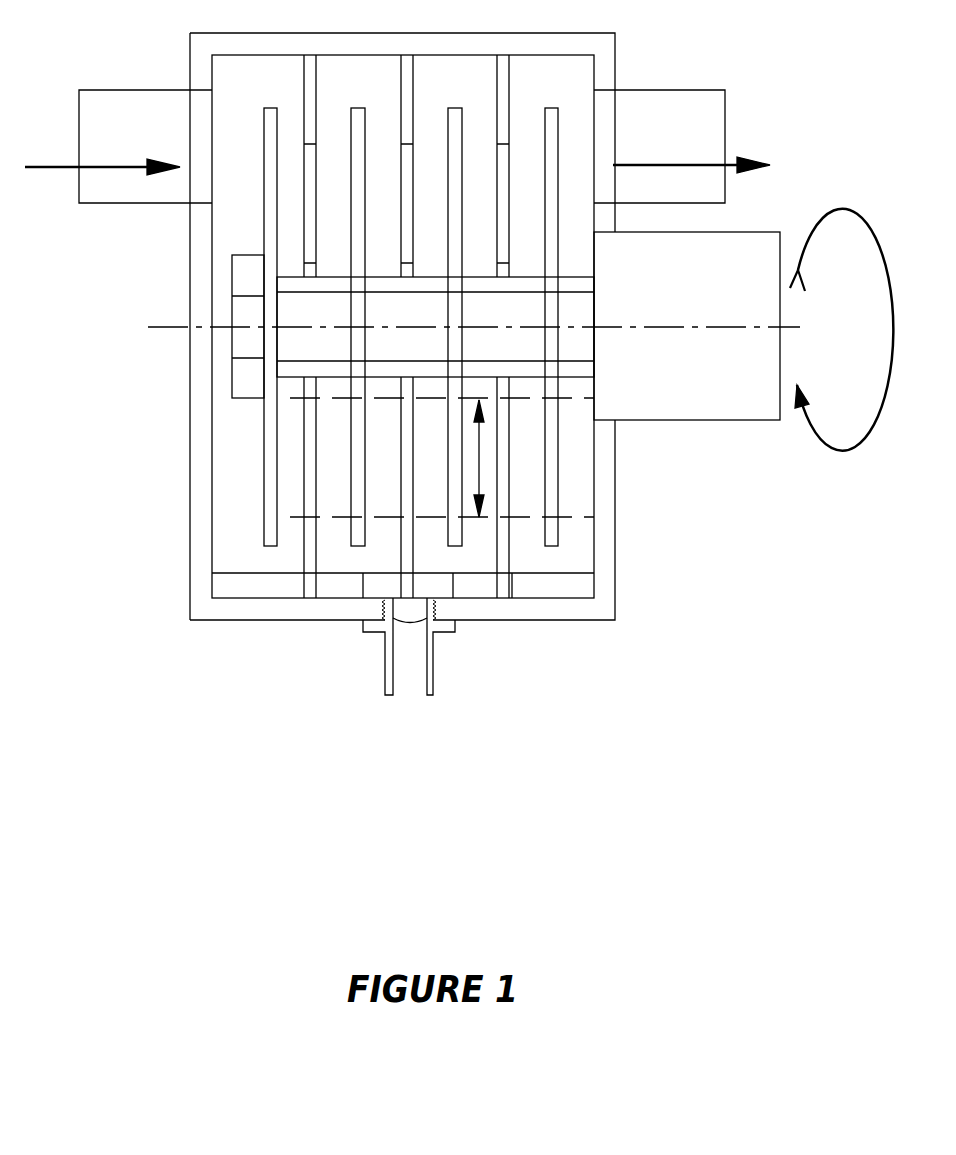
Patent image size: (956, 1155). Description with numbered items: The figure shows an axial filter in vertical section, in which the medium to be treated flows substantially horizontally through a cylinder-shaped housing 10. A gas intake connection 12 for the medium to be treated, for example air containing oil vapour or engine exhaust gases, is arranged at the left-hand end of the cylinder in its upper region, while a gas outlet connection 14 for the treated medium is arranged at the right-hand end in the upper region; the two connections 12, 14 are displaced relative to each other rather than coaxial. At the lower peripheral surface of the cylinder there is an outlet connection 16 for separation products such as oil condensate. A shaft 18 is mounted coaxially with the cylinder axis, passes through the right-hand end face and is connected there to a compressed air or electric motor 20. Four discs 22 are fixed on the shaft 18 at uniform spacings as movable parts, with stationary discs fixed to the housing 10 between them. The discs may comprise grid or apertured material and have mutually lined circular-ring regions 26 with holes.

The housing 10 is at (213, 444).
The gas intake connection 12 is at (115, 146).
The gas outlet connection 14 is at (685, 146).
The outlet connection 16 is at (410, 694).
The shaft 18 is at (303, 343).
The motor 20 is at (683, 407).
The discs 22 is at (263, 516).
The mutually lined regions 26 is at (480, 477).